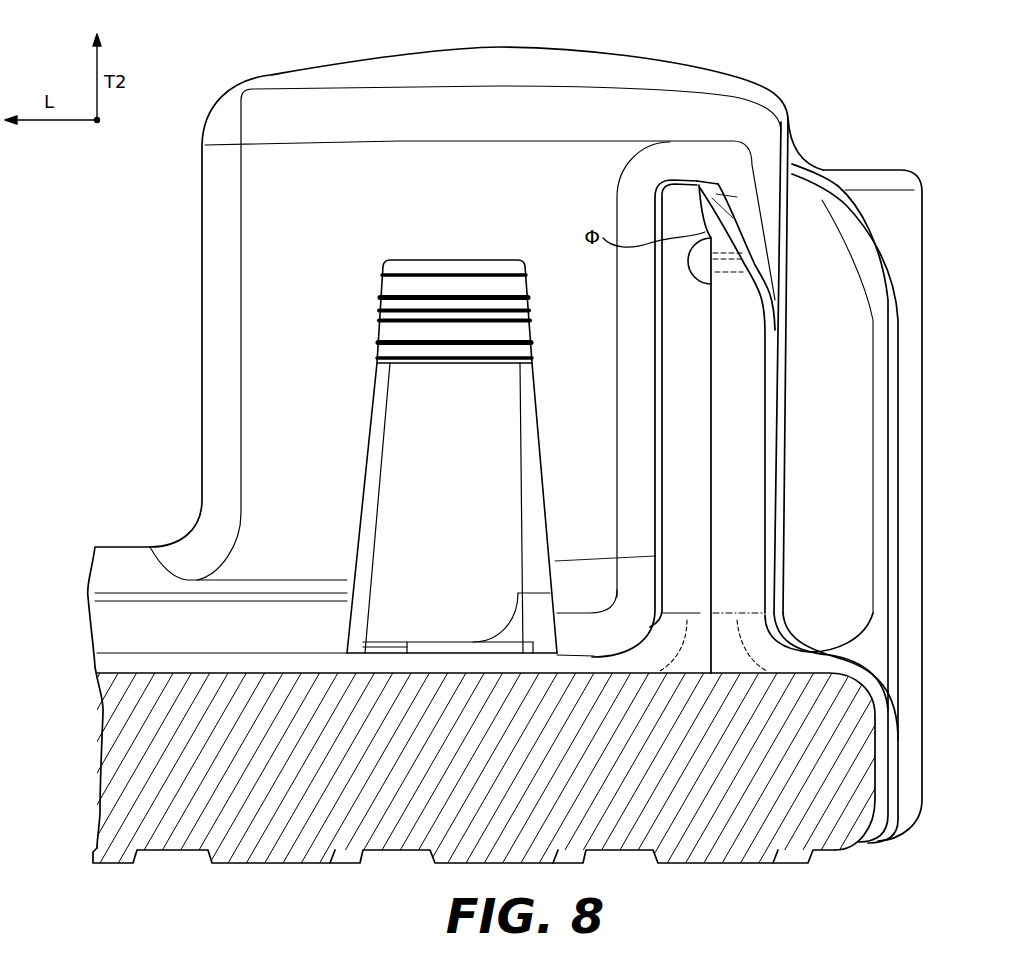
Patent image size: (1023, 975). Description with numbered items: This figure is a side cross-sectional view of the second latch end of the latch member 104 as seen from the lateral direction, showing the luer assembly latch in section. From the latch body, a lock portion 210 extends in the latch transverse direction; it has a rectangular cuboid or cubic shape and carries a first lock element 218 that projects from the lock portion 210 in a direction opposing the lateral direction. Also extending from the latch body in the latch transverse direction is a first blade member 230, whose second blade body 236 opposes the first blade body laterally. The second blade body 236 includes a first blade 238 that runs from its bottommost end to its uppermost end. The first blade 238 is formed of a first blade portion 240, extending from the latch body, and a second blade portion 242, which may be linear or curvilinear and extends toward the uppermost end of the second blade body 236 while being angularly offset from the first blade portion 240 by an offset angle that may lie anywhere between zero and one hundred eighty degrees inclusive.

The latch member 104 is at (121, 542).
The lock portion 210 is at (659, 113).
The first lock element 218 is at (415, 332).
The first blade member 230 is at (732, 478).
The second blade body 236 is at (745, 357).
The first blade 238 is at (712, 539).
The first blade portion 240 is at (715, 598).
The second blade portion 242 is at (720, 207).